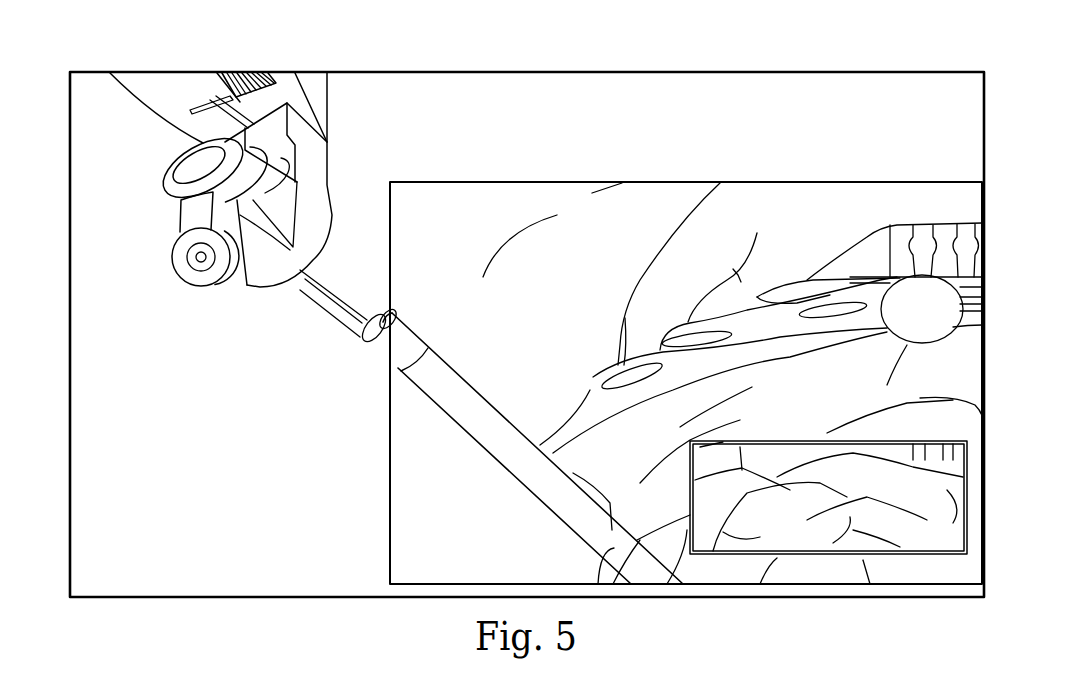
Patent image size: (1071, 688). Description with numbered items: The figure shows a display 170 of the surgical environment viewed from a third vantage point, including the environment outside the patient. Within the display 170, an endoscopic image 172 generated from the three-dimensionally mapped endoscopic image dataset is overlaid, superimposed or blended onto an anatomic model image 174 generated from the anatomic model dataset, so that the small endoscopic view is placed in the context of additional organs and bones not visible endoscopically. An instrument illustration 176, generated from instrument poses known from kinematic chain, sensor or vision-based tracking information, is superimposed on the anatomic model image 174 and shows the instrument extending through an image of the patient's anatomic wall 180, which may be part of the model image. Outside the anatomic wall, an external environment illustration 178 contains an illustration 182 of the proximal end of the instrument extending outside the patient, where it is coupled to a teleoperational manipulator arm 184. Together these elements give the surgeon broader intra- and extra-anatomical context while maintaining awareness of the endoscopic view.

The display 170 is at (345, 70).
The endoscopic image 172 is at (797, 438).
The anatomic model image 174 is at (780, 178).
The instrument illustration 176 is at (507, 470).
The external environment illustration 178 is at (160, 257).
The anatomic wall image 180 is at (541, 323).
The proximal end illustration 182 is at (320, 306).
The teleoperational manipulator arm 184 is at (160, 115).